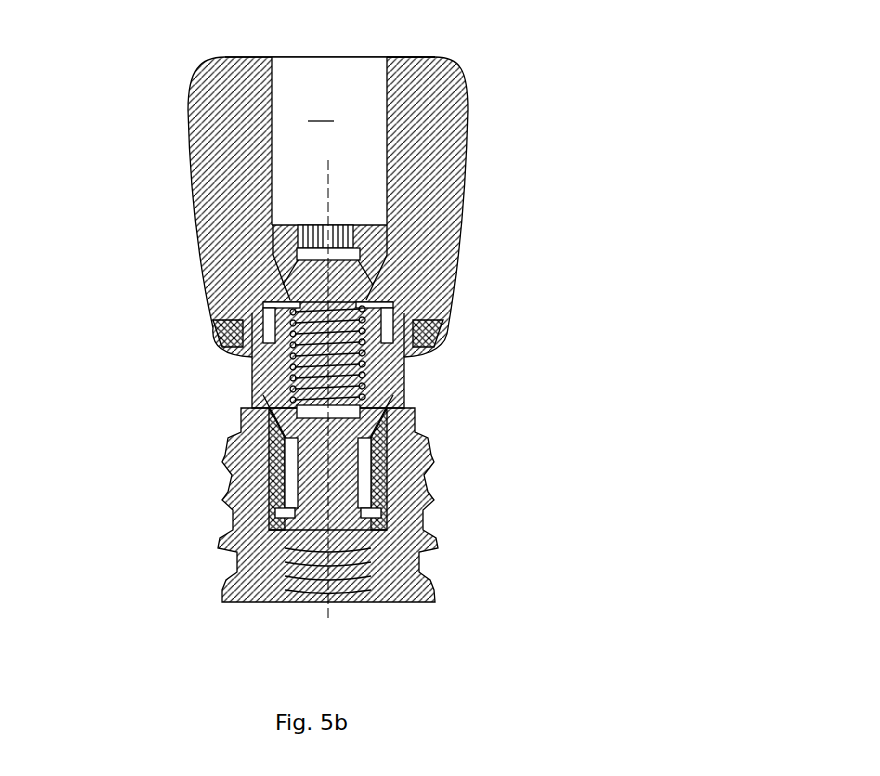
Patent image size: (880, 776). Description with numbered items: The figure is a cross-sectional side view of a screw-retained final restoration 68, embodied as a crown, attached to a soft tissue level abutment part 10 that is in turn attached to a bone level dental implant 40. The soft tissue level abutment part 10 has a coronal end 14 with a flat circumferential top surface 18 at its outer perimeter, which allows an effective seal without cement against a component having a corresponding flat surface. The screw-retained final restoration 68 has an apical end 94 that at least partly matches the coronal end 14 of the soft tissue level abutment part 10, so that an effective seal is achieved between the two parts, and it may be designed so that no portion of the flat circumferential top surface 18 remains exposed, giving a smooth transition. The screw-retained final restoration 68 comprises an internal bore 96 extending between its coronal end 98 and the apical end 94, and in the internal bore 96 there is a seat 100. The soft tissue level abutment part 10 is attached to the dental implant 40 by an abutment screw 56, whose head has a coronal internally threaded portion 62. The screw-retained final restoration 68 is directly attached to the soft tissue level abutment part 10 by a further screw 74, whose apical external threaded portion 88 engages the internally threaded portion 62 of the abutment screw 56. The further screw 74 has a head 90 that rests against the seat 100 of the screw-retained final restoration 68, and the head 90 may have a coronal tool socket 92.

The soft tissue level abutment part 10 is at (297, 321).
The dental implant 40 is at (379, 505).
The abutment screw 56 is at (393, 462).
The screw-retained final restoration 68 is at (265, 232).
The further screw 74 is at (408, 244).
The apical external threaded portion 88 is at (415, 362).
The coronal internally threaded portion 62 is at (415, 362).
The head 90 is at (403, 269).
The coronal tool socket 92 is at (211, 222).
The apical end 94 is at (239, 347).
The coronal end 14 is at (239, 347).
The flat circumferential top surface 18 is at (239, 347).
The internal bore 96 is at (330, 141).
The coronal end 98 is at (453, 42).
The seat 100 is at (404, 318).